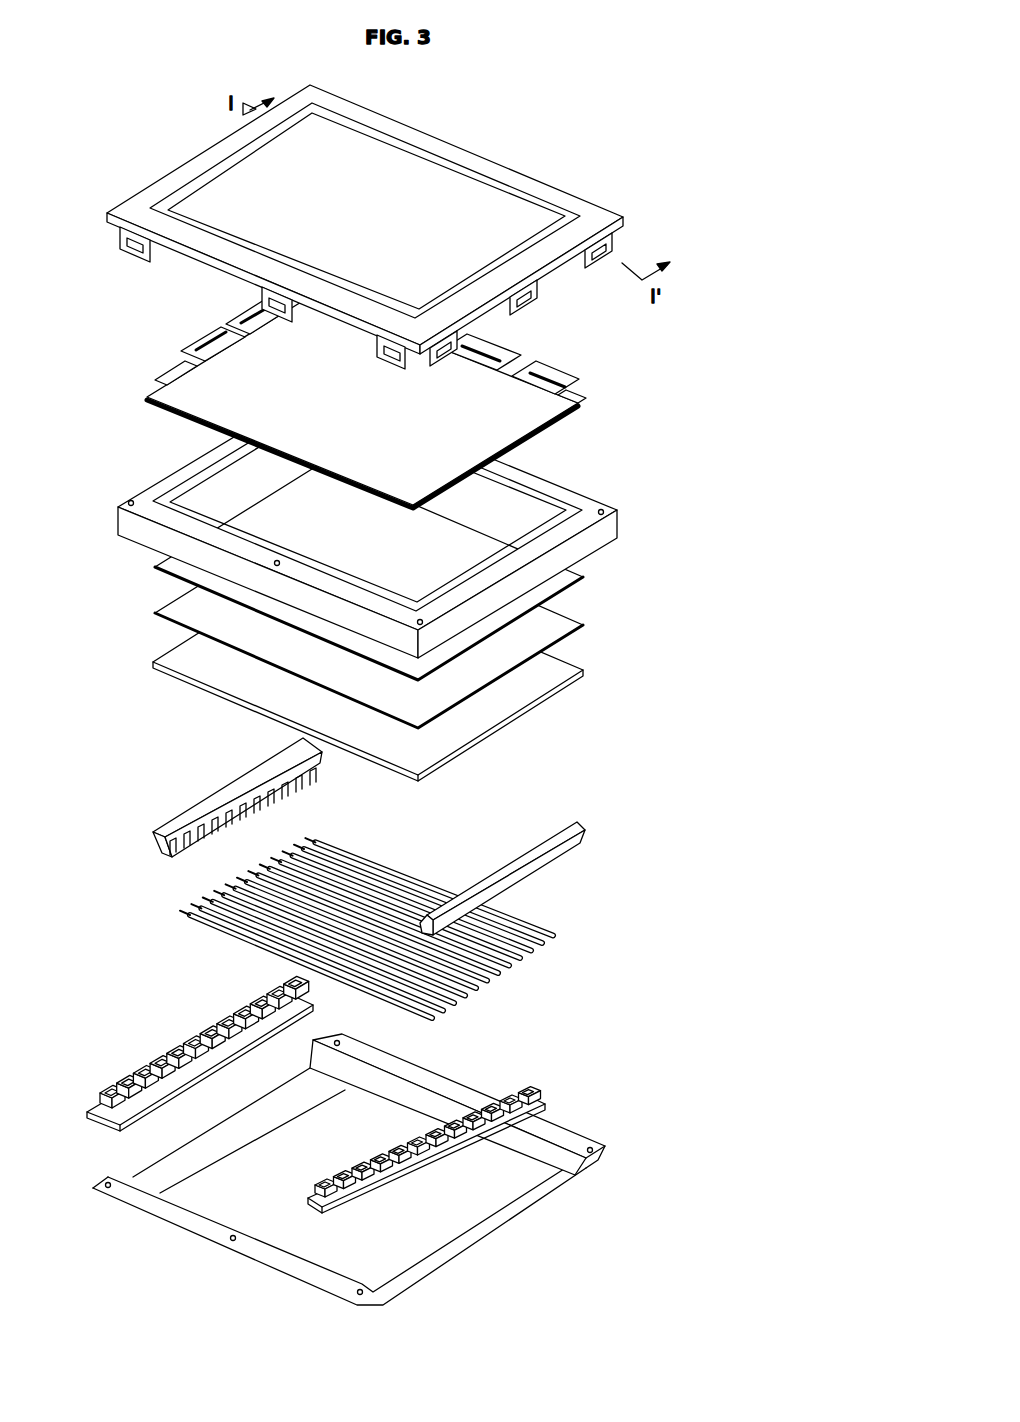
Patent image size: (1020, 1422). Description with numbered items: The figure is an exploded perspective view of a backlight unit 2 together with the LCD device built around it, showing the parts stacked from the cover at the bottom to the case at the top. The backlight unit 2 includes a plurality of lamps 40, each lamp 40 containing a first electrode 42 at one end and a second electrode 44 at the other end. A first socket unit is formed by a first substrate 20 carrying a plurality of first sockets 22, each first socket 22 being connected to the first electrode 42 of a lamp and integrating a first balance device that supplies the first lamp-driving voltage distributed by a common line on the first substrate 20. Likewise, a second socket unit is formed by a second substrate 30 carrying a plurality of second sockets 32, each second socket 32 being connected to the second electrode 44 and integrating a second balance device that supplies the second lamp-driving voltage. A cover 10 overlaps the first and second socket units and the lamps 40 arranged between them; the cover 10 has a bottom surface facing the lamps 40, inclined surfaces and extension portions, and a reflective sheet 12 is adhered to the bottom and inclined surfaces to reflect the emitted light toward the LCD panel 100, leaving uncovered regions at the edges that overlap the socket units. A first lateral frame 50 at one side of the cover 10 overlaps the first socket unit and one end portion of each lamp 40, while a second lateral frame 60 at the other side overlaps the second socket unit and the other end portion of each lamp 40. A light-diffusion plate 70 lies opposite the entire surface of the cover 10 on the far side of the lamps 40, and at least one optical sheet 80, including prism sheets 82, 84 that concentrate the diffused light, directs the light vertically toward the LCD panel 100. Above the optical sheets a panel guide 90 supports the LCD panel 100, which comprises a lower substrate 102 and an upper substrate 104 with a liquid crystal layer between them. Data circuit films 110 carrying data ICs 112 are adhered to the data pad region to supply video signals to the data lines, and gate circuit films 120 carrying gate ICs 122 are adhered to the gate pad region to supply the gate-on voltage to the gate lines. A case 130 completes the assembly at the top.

The backlight unit 2 is at (719, 583).
The cover 10 is at (375, 1169).
The reflective sheet 12 is at (502, 1160).
The first substrate 20 is at (196, 1053).
The first sockets 22 is at (185, 1050).
The second substrate 30 is at (426, 1157).
The second sockets 32 is at (512, 1092).
The lamps 40 is at (401, 902).
The first electrode 42 is at (318, 840).
The second electrode 44 is at (557, 937).
The first lateral frame 50 is at (218, 797).
The second lateral frame 60 is at (578, 825).
The light-diffusion plate 70 is at (575, 665).
The optical sheet 80 is at (434, 596).
The prism sheet 82 is at (578, 618).
The prism sheet 84 is at (578, 572).
The panel guide 90 is at (600, 503).
The LCD panel 100 is at (394, 402).
The lower substrate 102 is at (568, 418).
The upper substrate 104 is at (576, 396).
The data circuit films 110 is at (529, 357).
The data IC 112 is at (560, 375).
The gate circuit films 120 is at (185, 342).
The gate IC 122 is at (170, 372).
The case 130 is at (616, 240).